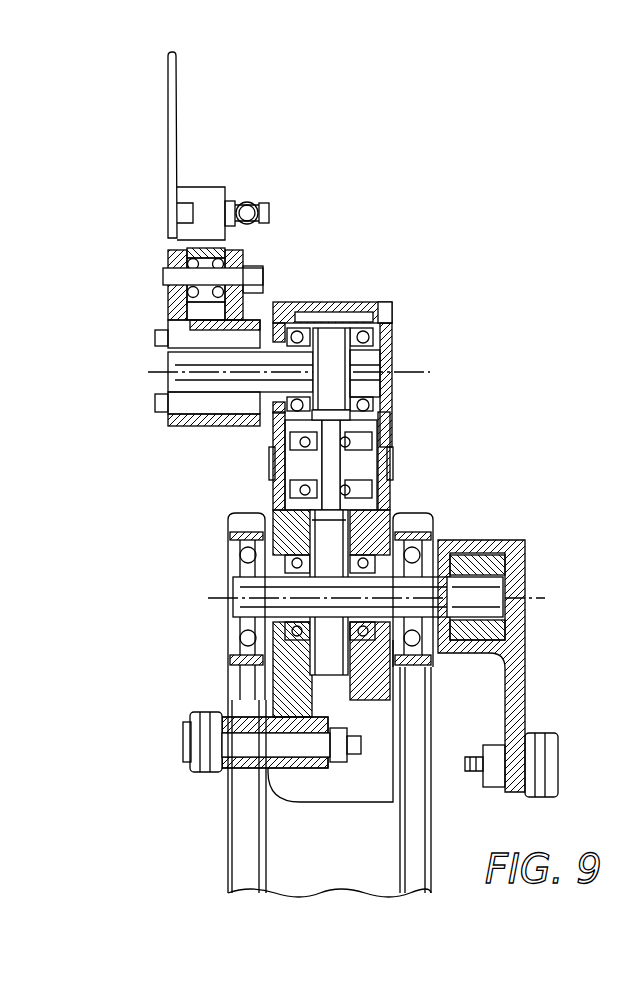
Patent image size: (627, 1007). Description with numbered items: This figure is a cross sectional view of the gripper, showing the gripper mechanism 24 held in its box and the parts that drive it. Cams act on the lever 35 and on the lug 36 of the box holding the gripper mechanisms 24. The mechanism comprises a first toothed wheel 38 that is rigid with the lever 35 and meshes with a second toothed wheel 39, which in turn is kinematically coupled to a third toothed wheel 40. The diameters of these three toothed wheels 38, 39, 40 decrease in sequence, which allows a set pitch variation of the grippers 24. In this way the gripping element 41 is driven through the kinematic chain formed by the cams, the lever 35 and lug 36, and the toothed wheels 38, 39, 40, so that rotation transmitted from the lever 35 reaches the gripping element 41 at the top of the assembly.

The gripper mechanism 24 is at (180, 626).
The lever 35 is at (522, 693).
The lug 36 is at (292, 690).
The first toothed wheel 38 is at (342, 548).
The second toothed wheel 39 is at (337, 425).
The third toothed wheel 40 is at (332, 338).
The gripping element 41 is at (178, 148).